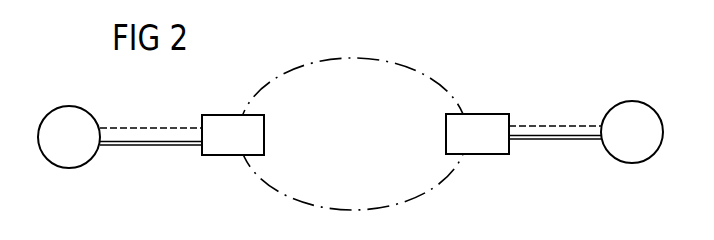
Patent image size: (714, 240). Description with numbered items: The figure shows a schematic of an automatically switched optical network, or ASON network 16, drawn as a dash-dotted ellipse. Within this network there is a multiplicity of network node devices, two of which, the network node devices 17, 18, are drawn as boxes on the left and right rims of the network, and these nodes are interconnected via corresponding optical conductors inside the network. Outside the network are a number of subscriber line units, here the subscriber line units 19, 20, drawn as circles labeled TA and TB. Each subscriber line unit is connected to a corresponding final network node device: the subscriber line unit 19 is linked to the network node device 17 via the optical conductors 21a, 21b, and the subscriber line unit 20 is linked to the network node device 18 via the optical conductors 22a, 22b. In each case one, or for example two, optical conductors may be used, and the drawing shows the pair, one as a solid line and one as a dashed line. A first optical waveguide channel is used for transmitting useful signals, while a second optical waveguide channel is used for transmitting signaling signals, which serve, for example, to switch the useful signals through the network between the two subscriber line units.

The automatically switched optical network 16 is at (472, 72).
The network node device 17 is at (264, 136).
The network node device 18 is at (446, 135).
The subscriber line unit 19 is at (67, 168).
The subscriber line unit 20 is at (630, 163).
The optical conductor 21a is at (148, 146).
The optical conductor 21b is at (147, 128).
The optical conductor 22a is at (550, 141).
The optical conductor 22b is at (548, 125).